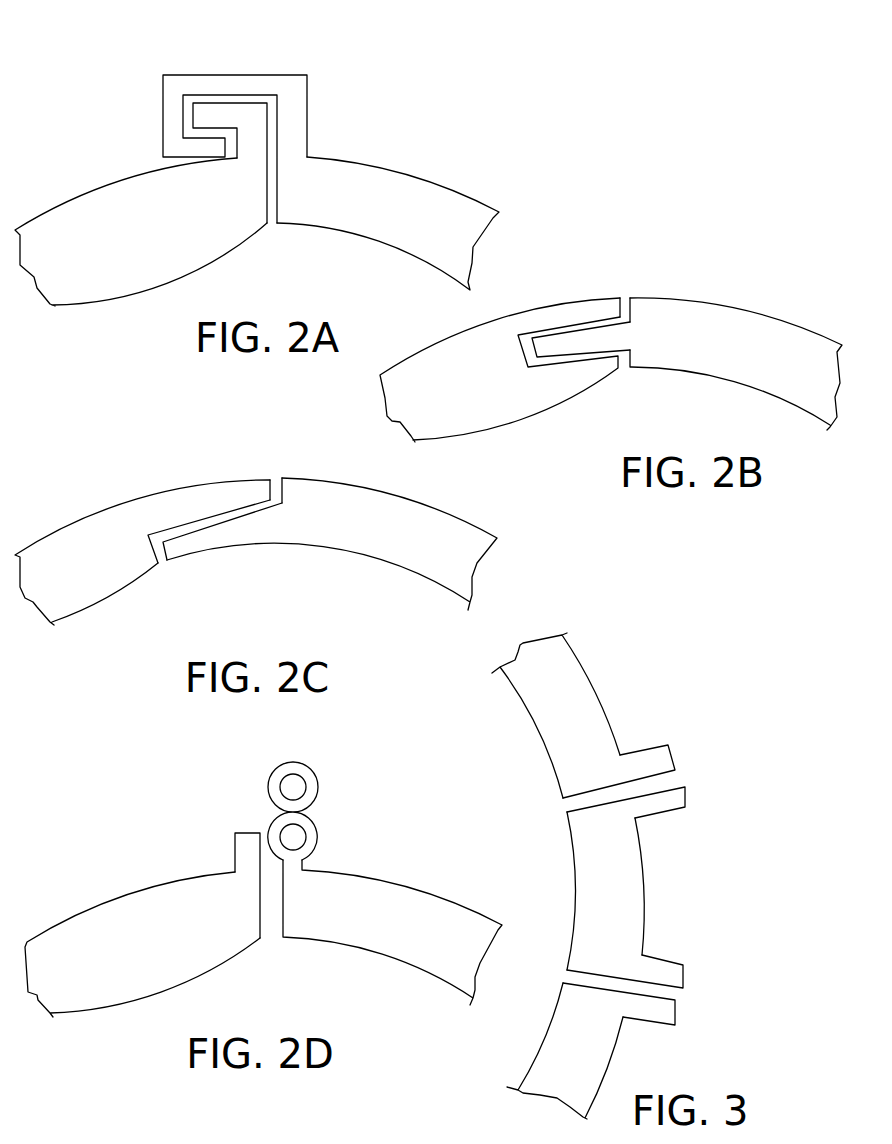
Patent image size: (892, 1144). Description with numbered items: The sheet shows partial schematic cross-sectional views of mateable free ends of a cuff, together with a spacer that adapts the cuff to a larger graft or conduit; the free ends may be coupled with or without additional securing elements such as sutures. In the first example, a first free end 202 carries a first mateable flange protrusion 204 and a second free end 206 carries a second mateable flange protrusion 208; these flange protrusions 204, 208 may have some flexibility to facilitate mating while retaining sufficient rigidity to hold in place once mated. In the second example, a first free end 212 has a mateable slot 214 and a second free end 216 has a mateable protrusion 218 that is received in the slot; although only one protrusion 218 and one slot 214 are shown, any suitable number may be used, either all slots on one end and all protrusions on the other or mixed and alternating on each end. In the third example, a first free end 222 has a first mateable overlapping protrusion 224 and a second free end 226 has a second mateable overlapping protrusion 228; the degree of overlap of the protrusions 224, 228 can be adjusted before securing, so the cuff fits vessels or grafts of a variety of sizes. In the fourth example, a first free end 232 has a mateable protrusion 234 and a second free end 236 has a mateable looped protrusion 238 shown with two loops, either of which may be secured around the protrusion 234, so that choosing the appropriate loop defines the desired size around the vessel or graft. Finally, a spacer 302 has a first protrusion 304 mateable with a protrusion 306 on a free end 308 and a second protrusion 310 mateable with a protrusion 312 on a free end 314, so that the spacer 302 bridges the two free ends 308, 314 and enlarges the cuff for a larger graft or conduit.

In FIG. 2A, the first free end 202 is at (153, 227).
In FIG. 2A, the first mateable flange protrusion 204 is at (202, 118).
In FIG. 2A, the second free end 206 is at (383, 220).
In FIG. 2A, the second mateable flange protrusion 208 is at (252, 82).
In FIG. 2B, the first free end 212 is at (483, 377).
In FIG. 2B, the mateable slot 214 is at (592, 300).
In FIG. 2B, the second free end 216 is at (713, 357).
In FIG. 2B, the mateable protrusion 218 is at (557, 340).
In FIG. 2C, the first free end 222 is at (100, 573).
In FIG. 2C, the first mateable overlapping protrusion 224 is at (233, 492).
In FIG. 2C, the second free end 226 is at (412, 557).
In FIG. 2C, the second mateable overlapping protrusion 228 is at (227, 535).
In FIG. 2D, the first free end 232 is at (162, 942).
In FIG. 2D, the mateable protrusion 234 is at (240, 848).
In FIG. 2D, the second free end 236 is at (415, 950).
In FIG. 2D, the mateable looped protrusion 238 is at (322, 782).
In FIG. 3, the spacer 302 is at (630, 895).
In FIG. 3, the first protrusion 304 is at (673, 795).
In FIG. 3, the protrusion 306 is at (667, 760).
In FIG. 3, the free end 308 is at (590, 712).
In FIG. 3, the second protrusion 310 is at (675, 975).
In FIG. 3, the protrusion 312 is at (670, 1013).
In FIG. 3, the free end 314 is at (600, 1048).